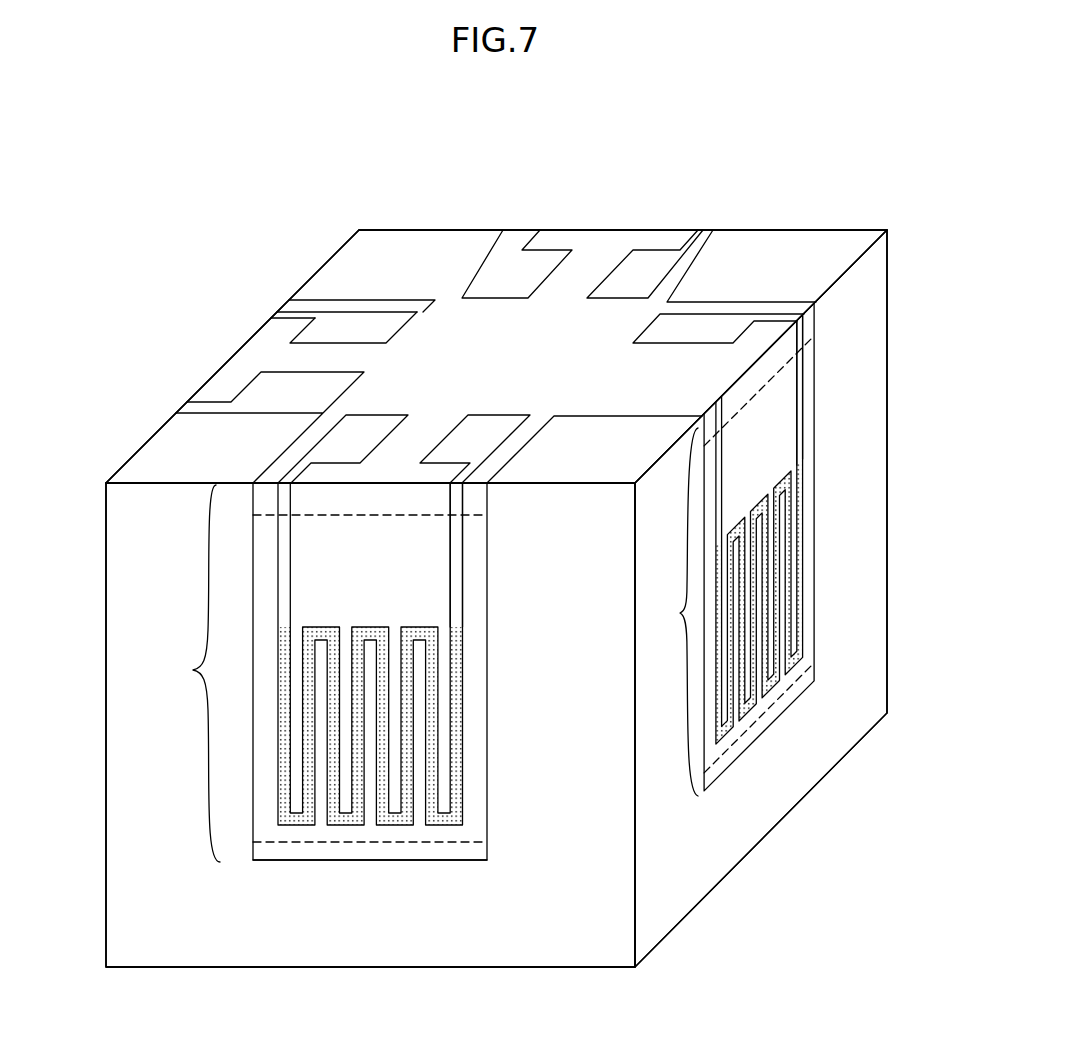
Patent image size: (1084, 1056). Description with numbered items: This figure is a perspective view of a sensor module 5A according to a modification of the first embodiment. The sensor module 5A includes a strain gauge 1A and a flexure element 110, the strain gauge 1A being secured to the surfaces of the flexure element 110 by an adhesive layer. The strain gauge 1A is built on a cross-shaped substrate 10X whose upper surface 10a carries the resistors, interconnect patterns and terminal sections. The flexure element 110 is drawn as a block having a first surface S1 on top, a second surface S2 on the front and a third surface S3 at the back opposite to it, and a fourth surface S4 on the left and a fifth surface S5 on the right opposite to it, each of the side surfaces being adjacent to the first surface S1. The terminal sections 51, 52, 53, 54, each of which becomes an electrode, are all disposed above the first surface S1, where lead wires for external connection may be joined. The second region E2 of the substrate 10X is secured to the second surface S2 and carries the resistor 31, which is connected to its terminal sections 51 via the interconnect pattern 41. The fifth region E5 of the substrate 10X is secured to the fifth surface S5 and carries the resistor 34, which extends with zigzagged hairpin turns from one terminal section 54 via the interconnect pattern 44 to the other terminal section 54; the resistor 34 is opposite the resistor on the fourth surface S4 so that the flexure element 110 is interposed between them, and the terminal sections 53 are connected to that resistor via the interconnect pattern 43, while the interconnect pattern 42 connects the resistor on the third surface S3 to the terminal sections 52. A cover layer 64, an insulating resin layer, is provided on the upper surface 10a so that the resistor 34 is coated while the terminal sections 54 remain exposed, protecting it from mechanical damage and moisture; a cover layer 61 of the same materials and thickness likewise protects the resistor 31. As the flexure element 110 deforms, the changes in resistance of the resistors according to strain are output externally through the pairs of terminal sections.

The sensor module 5A is at (148, 146).
The strain gauge 1A is at (259, 861).
The upper surface 10a is at (273, 852).
The substrate 10X is at (325, 861).
The resistor 31 is at (441, 817).
The resistor 34 is at (797, 657).
The interconnect pattern 41 is at (453, 570).
The interconnect pattern 42 is at (527, 242).
The interconnect pattern 43 is at (295, 318).
The interconnect pattern 44 is at (802, 403).
The terminal sections 51 is at (352, 440).
The terminal sections 52 is at (642, 273).
The terminal sections 53 is at (353, 328).
The terminal sections 54 is at (698, 328).
The cover layer 61 is at (374, 848).
The cover layer 64 is at (815, 304).
The flexure element 110 is at (865, 345).
The first surface S1 is at (837, 257).
The second surface S2 is at (137, 508).
The third surface S3 is at (397, 228).
The fourth surface S4 is at (142, 447).
The fifth surface S5 is at (865, 620).
The second region E2 is at (191, 673).
The fifth region E5 is at (672, 612).